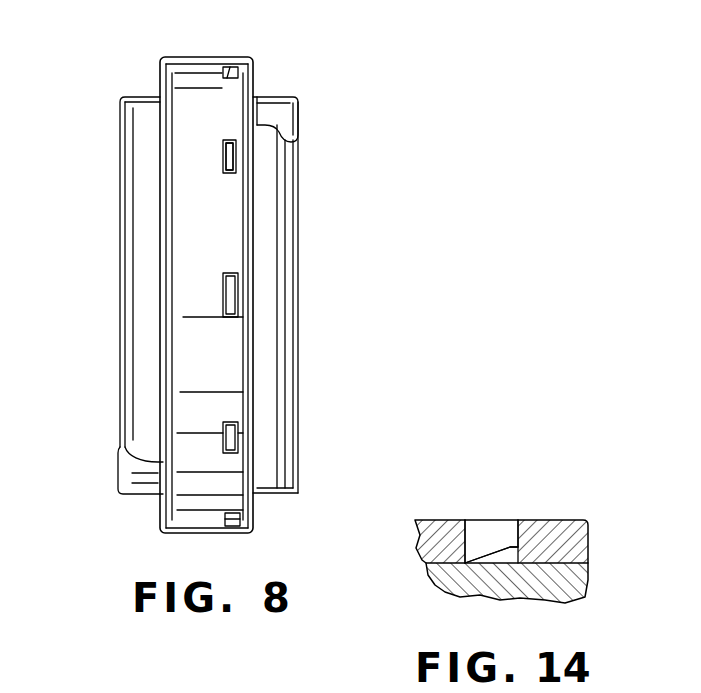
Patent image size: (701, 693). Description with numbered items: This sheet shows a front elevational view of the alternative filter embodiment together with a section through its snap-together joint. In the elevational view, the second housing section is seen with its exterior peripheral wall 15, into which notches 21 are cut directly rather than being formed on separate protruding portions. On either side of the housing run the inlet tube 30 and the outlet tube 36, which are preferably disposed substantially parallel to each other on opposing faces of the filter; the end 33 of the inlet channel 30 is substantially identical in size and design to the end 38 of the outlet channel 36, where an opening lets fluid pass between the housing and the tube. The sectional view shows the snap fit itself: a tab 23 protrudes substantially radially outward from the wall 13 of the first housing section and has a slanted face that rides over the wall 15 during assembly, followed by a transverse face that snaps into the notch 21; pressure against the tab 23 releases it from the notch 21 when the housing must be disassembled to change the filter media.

In FIG. 8, the peripheral wall 15 is at (188, 57).
In FIG. 14, the peripheral wall 15 is at (535, 520).
In FIG. 8, the end of the inlet channel 33 is at (300, 100).
In FIG. 8, the notch 21 is at (230, 140).
In FIG. 14, the notch 21 is at (475, 520).
In FIG. 8, the tab 23 is at (230, 167).
In FIG. 14, the tab 23 is at (485, 552).
In FIG. 8, the outlet tube 36 is at (127, 276).
In FIG. 8, the inlet tube 30 is at (287, 298).
In FIG. 8, the end of the outlet tube 38 is at (120, 483).
In FIG. 14, the peripheral wall 13 is at (580, 590).